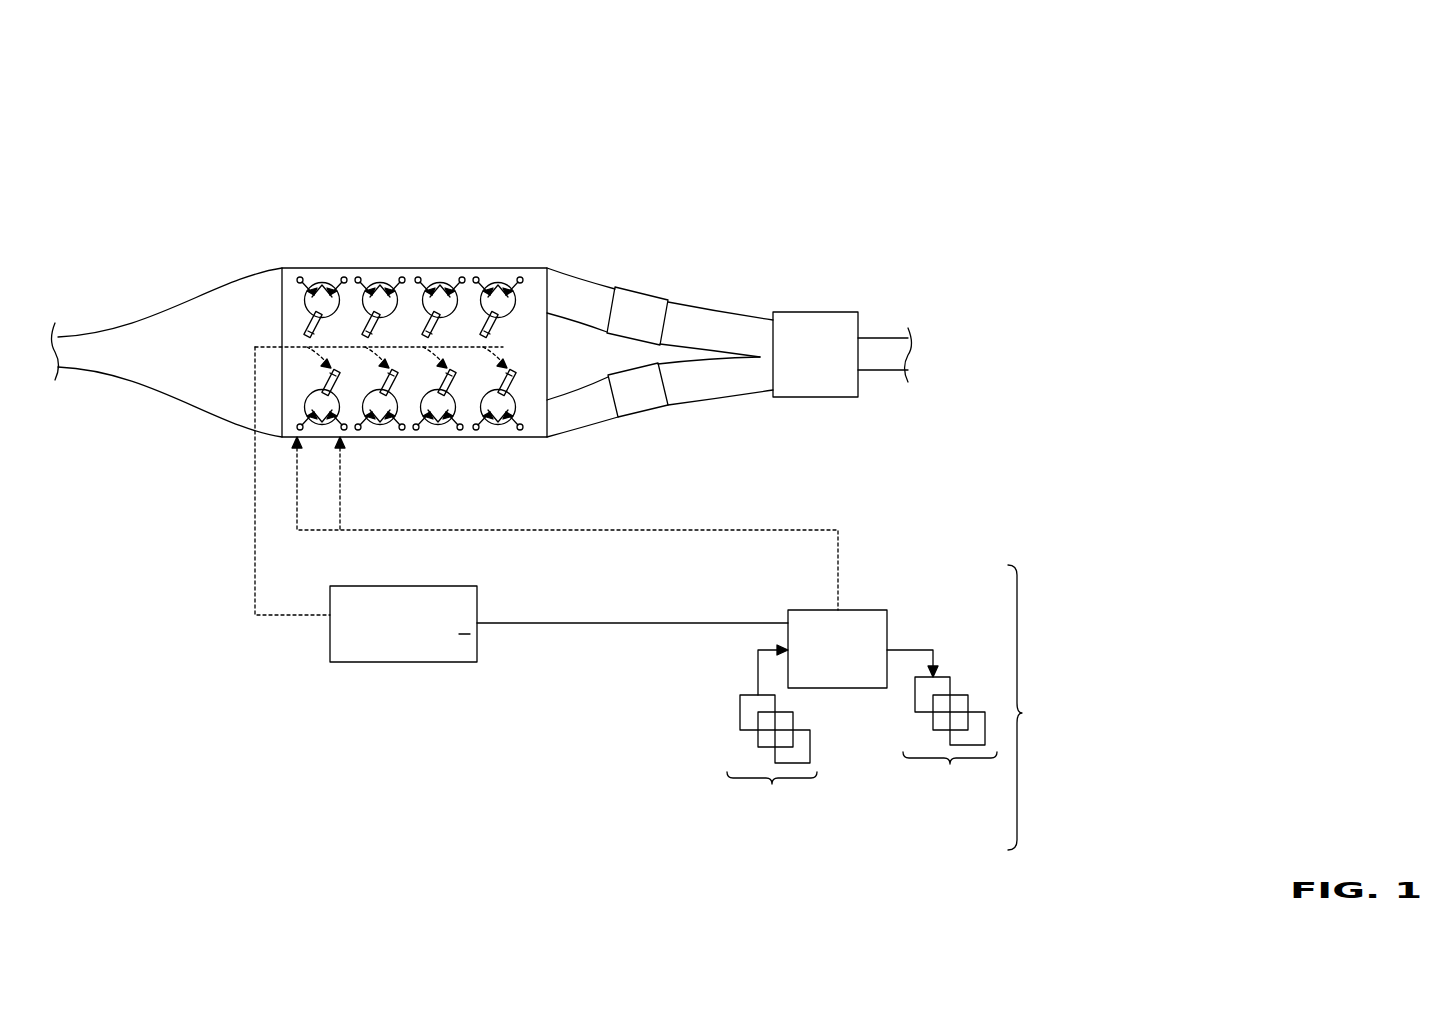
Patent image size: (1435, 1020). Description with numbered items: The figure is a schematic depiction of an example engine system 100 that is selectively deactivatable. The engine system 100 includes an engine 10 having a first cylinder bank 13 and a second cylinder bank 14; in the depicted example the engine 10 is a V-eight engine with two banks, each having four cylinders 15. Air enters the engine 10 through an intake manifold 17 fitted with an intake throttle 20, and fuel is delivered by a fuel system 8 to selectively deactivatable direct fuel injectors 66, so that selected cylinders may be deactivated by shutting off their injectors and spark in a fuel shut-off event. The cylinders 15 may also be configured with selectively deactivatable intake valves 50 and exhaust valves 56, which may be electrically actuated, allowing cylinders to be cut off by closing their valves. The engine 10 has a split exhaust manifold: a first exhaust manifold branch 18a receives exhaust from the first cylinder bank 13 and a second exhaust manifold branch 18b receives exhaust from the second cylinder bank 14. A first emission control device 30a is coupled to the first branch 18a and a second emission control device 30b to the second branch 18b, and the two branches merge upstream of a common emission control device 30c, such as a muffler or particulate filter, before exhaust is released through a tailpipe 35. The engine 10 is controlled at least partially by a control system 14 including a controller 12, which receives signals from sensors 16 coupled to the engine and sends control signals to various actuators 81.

The engine system 100 is at (1053, 150).
The engine 10 is at (484, 241).
The first cylinder bank 13 is at (410, 258).
The second cylinder bank 14 is at (410, 447).
The cylinders 15 is at (548, 286).
The intake manifold 17 is at (167, 352).
The first exhaust manifold branch 18a is at (595, 293).
The second exhaust manifold branch 18b is at (587, 420).
The intake throttle 20 is at (115, 343).
The first emission control device 30a is at (645, 292).
The second emission control device 30b is at (638, 418).
The common emission control device 30c is at (806, 312).
The tailpipe 35 is at (883, 345).
The intake valves 50 is at (477, 435).
The exhaust valves 56 is at (515, 435).
The fuel injectors 66 is at (308, 329).
The fuel system 8 is at (521, 504).
The controller 12 is at (827, 661).
The sensors 16 is at (772, 739).
The actuators 81 is at (942, 732).